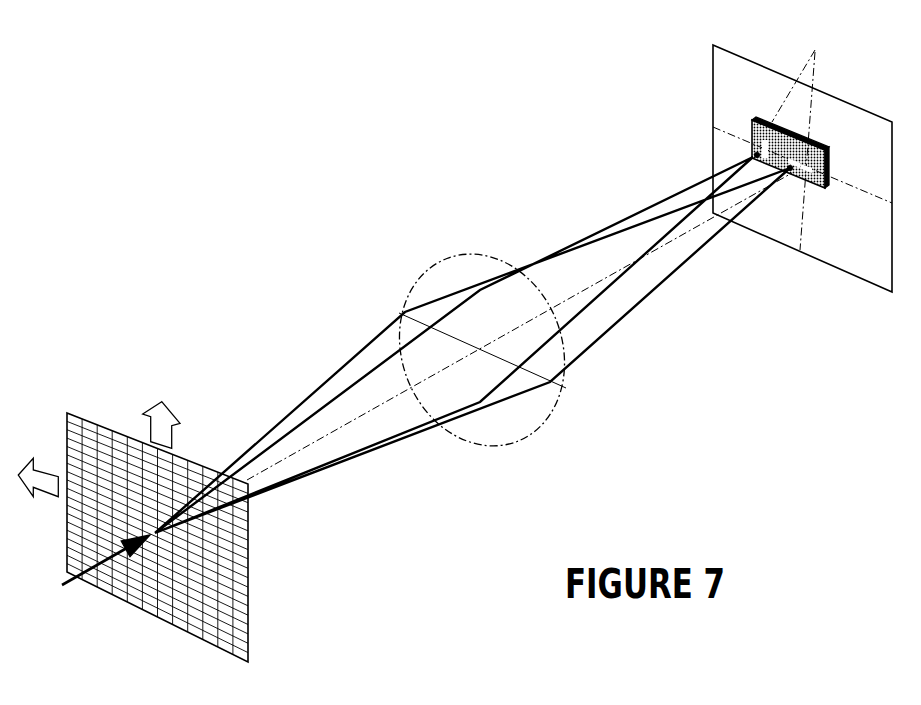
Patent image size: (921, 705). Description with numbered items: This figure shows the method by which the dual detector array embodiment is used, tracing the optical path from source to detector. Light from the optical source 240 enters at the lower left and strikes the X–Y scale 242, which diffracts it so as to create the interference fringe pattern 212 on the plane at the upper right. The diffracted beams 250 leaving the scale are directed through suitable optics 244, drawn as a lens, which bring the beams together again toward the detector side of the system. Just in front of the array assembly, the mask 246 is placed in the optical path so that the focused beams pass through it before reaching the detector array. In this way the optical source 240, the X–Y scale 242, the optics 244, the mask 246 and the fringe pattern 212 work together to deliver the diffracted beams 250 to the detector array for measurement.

The interference fringe pattern 212 is at (802, 167).
The optical source 240 is at (85, 569).
The X–Y scale 242 is at (155, 532).
The optics 244 is at (413, 267).
The mask 246 is at (748, 133).
The diffracted beams 250 is at (365, 449).